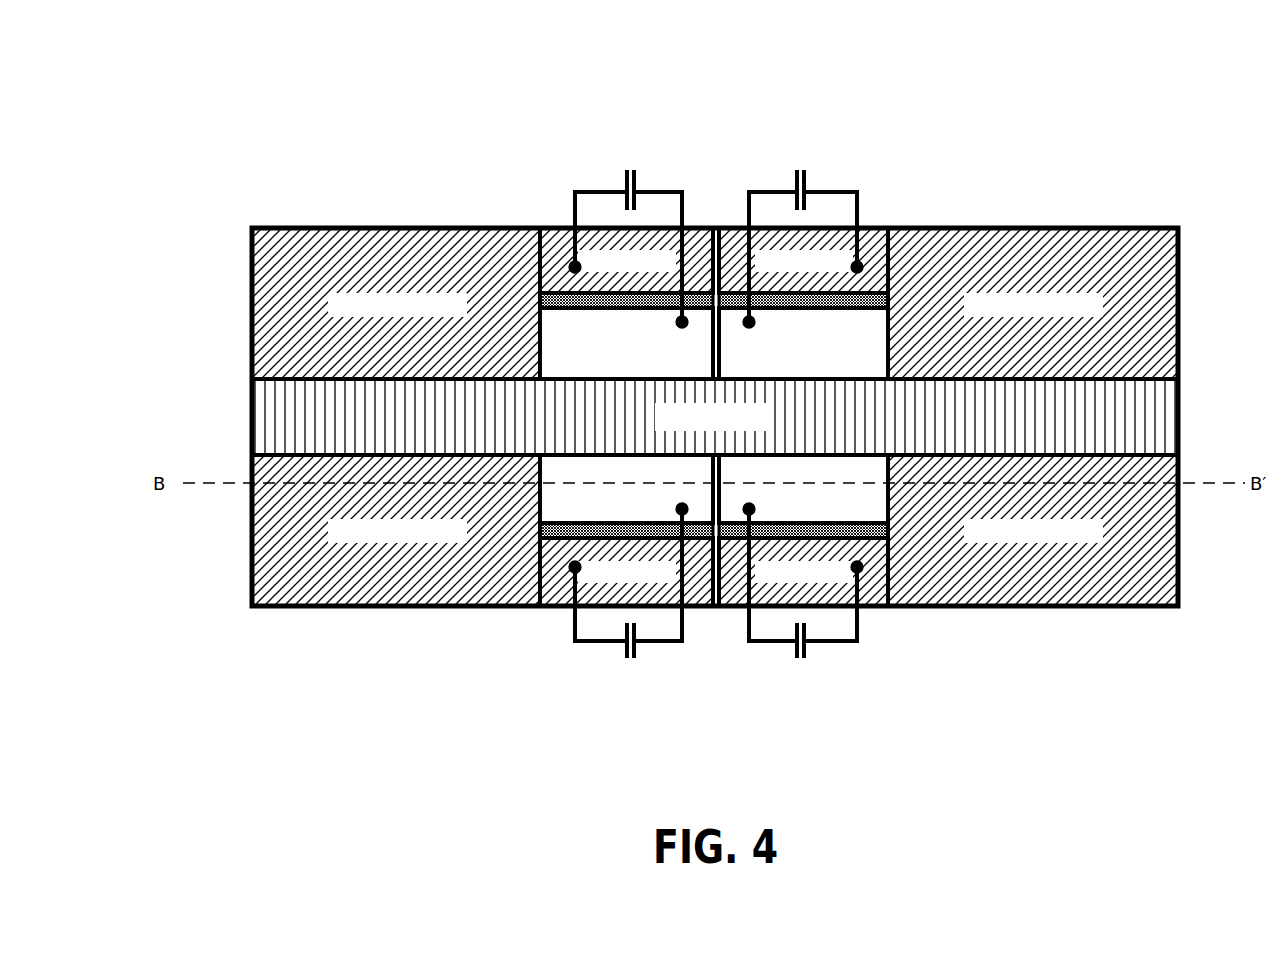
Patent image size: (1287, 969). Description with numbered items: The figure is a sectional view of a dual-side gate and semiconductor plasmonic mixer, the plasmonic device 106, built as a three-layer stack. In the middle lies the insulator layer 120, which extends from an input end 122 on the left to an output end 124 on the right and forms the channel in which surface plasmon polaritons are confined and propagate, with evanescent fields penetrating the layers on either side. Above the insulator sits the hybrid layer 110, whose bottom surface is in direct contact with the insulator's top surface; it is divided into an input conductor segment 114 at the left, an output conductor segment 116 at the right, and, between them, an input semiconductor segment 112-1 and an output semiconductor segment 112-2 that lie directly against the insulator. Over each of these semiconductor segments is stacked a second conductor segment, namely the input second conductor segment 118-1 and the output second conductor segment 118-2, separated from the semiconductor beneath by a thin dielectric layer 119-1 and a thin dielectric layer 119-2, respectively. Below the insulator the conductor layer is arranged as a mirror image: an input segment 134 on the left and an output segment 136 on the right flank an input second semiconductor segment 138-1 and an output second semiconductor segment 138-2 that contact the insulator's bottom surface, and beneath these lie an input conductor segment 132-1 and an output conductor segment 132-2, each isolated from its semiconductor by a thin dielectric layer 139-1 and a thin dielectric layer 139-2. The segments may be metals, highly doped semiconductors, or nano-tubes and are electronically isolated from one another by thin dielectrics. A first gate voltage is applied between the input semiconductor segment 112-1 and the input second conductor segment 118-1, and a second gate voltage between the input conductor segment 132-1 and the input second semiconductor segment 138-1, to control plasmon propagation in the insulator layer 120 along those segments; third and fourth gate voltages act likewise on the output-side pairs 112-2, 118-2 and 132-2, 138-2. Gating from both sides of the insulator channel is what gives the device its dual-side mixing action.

The plasmonic device 106 is at (203, 102).
The hybrid layer 110 is at (325, 228).
The input semiconductor segment 112-1 is at (548, 342).
The output semiconductor segment 112-2 is at (882, 340).
The input conductor segment 114 is at (268, 316).
The output conductor segment 116 is at (1163, 318).
The input second conductor segment 118-1 is at (560, 245).
The output second conductor segment 118-2 is at (873, 243).
The thin dielectric layer 119-1 is at (536, 296).
The thin dielectric layer 119-2 is at (888, 300).
The insulator layer 120 is at (252, 396).
The input end 122 is at (268, 425).
The output end 124 is at (1163, 425).
The input conductor segment 132-1 is at (552, 590).
The output conductor segment 132-2 is at (868, 594).
The input segment 134 is at (252, 560).
The output segment 136 is at (1163, 565).
The input second semiconductor segment 138-1 is at (545, 495).
The output second semiconductor segment 138-2 is at (878, 497).
The thin dielectric layer 139-1 is at (535, 540).
The thin dielectric layer 139-2 is at (890, 538).